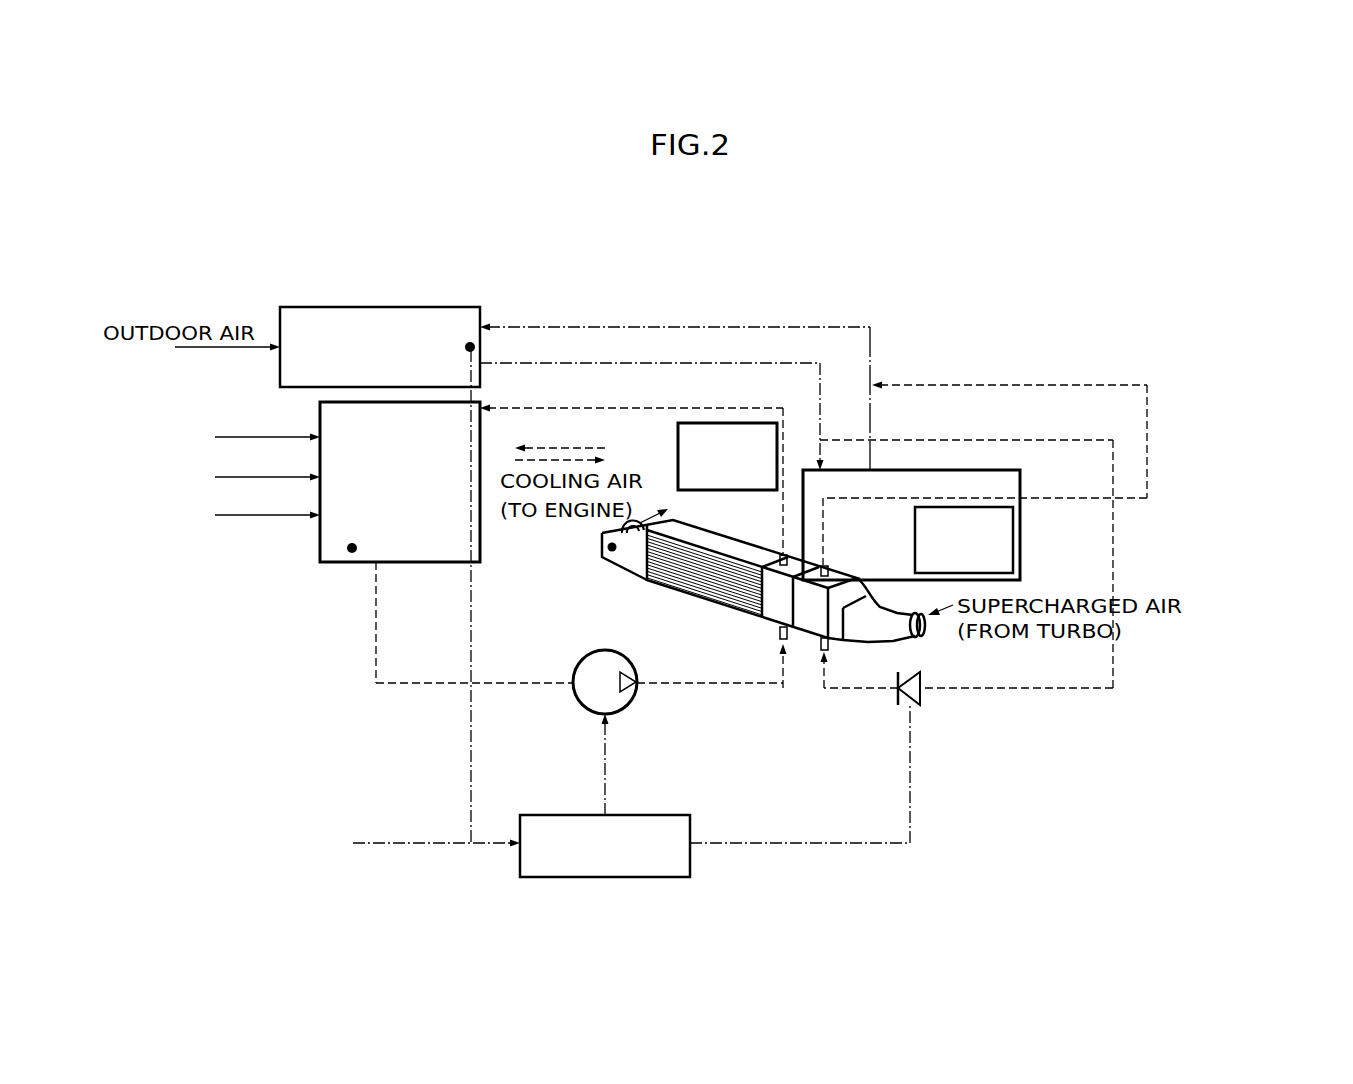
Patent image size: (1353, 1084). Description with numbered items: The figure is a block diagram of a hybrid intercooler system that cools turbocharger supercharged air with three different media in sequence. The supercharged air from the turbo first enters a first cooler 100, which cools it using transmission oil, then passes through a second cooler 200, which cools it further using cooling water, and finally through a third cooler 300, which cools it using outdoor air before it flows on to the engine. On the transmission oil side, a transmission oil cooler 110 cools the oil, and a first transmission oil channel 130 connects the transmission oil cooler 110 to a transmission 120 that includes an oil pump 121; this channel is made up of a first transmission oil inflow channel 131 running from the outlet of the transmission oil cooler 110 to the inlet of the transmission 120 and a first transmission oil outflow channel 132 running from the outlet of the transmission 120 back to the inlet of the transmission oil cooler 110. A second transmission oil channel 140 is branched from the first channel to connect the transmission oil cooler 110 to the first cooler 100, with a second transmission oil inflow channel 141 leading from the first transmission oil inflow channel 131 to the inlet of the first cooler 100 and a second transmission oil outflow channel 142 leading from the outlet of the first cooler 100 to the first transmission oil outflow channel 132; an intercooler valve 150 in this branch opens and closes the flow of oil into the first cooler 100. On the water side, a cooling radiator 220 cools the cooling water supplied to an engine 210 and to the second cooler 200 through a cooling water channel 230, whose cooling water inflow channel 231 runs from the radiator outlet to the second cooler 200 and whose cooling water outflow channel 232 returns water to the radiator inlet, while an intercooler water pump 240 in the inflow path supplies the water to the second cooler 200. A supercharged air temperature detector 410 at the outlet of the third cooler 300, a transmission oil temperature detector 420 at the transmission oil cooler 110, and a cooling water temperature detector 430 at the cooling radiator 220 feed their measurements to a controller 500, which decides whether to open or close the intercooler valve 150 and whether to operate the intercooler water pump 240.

The first cooler 100 is at (716, 638).
The transmission oil cooler 110 is at (400, 307).
The transmission 120 is at (1023, 534).
The oil pump 121 is at (1013, 540).
The first transmission oil channel 130 is at (745, 380).
The first transmission oil inflow channel 131 is at (763, 363).
The first transmission oil outflow channel 132 is at (793, 327).
The second transmission oil channel 140 is at (1059, 535).
The second transmission oil inflow channel 141 is at (1113, 458).
The second transmission oil outflow channel 142 is at (1148, 403).
The intercooler valve 150 is at (916, 692).
The second cooler 200 is at (775, 607).
The engine 210 is at (678, 455).
The cooling radiator 220 is at (320, 560).
The cooling water channel 230 is at (479, 598).
The cooling water inflow channel 231 is at (375, 668).
The cooling water outflow channel 232 is at (535, 408).
The intercooler water pump 240 is at (577, 693).
The third cooler 300 is at (702, 597).
The supercharged air temperature detector 410 is at (606, 550).
The transmission oil temperature detector 420 is at (470, 345).
The cooling water temperature detector 430 is at (348, 547).
The controller 500 is at (690, 833).